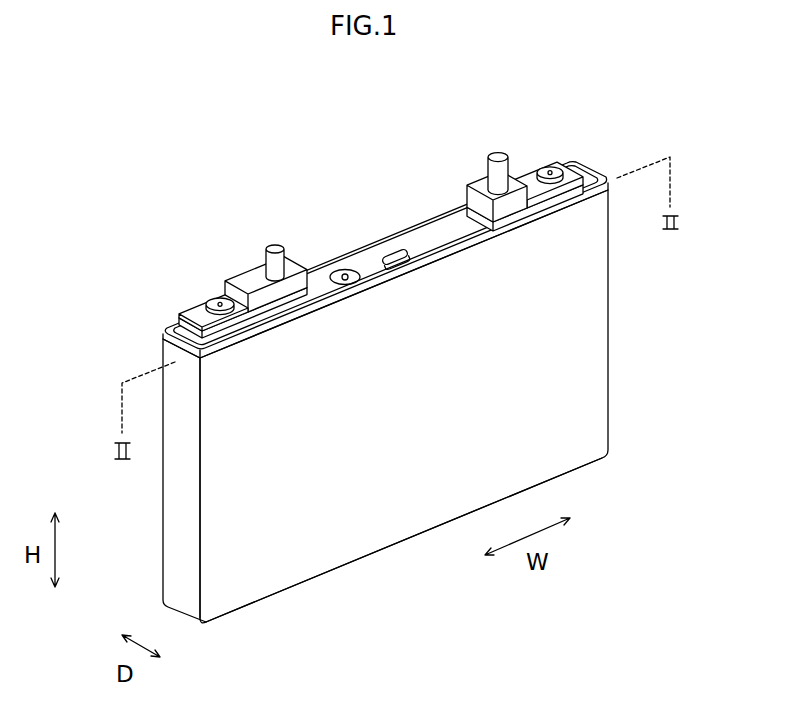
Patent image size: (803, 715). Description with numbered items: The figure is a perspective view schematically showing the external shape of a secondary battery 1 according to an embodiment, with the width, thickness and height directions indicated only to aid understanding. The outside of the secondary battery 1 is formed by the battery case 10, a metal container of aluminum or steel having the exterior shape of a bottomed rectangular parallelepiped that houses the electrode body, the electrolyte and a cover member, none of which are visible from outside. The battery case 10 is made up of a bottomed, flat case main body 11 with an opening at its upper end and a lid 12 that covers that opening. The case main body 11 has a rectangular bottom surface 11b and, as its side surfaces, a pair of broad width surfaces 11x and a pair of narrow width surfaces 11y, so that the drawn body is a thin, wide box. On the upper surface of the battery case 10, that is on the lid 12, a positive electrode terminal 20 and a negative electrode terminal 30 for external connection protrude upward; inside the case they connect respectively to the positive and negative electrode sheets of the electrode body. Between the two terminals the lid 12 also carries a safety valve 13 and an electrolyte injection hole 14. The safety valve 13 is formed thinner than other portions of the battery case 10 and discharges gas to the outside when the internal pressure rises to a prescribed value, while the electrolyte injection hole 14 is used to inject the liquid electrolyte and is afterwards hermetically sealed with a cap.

The secondary battery 1 is at (406, 342).
The battery case 10 is at (406, 403).
The case main body 11 is at (391, 417).
The broad width surface 11x is at (163, 500).
The narrow width surface 11y is at (182, 568).
The bottom surface 11b is at (303, 582).
The lid 12 is at (415, 260).
The safety valve 13 is at (392, 251).
The electrolyte injection hole 14 is at (343, 272).
The positive electrode terminal 20 is at (272, 246).
The negative electrode terminal 30 is at (489, 151).